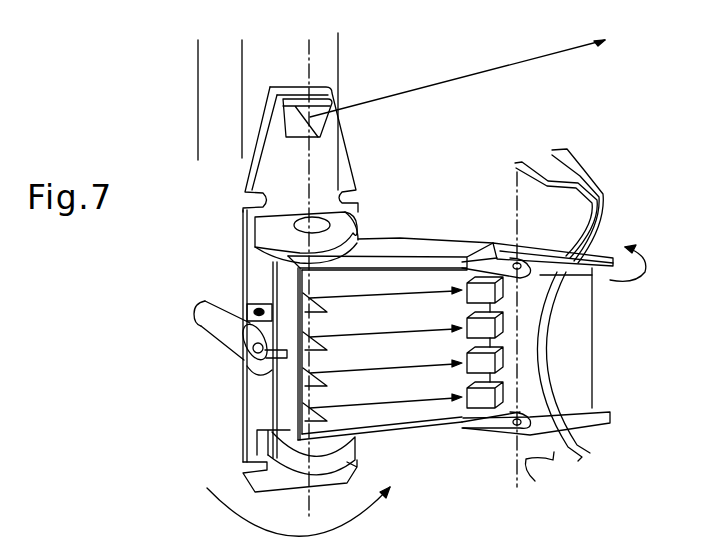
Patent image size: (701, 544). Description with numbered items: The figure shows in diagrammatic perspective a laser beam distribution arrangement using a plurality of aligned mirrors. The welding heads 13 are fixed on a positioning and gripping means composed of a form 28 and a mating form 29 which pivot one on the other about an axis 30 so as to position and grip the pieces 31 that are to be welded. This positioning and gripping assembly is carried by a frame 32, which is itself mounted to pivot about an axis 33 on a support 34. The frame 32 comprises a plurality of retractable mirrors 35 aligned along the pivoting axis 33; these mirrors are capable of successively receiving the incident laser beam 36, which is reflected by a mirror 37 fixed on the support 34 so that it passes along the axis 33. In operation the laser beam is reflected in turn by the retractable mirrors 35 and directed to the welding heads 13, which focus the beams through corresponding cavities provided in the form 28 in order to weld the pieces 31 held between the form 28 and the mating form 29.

The welding heads 13 is at (488, 410).
The form 28 is at (538, 250).
The mating form 29 is at (577, 325).
The axis 30 is at (517, 197).
The pieces 31 is at (597, 196).
The frame 32 is at (386, 254).
The axis 33 is at (308, 62).
The support 34 is at (330, 172).
The retractable mirrors 35 is at (303, 410).
The incident laser beam 36 is at (488, 70).
The mirror 37 is at (315, 123).